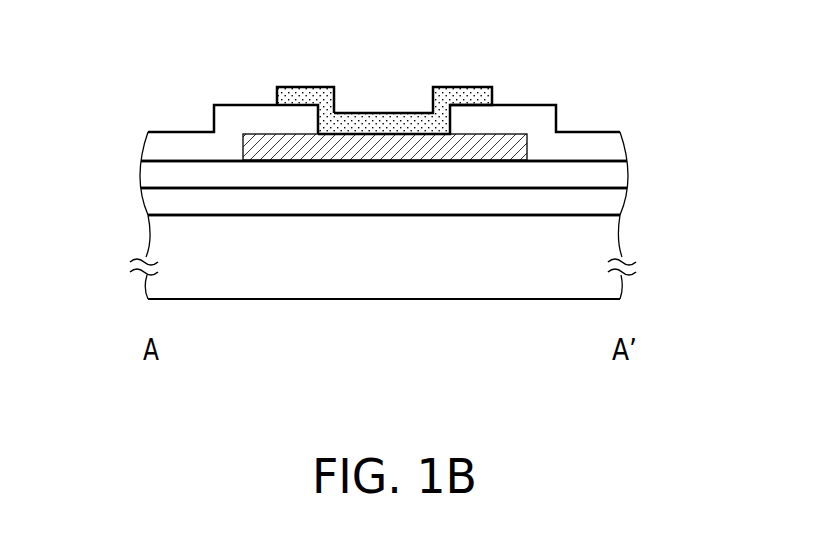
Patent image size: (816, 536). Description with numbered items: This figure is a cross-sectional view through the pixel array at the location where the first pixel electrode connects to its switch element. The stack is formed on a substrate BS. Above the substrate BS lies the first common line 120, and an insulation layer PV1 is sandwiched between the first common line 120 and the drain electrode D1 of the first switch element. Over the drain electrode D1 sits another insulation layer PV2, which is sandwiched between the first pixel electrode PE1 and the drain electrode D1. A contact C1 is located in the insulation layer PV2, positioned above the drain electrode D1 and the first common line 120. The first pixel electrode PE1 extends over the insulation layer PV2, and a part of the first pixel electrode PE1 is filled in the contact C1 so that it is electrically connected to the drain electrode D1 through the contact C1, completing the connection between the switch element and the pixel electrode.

The contact C1 is at (320, 113).
The drain electrode D1 is at (407, 150).
The first pixel electrode PE1 is at (470, 100).
The insulation layer PV2 is at (183, 150).
The insulation layer PV1 is at (585, 175).
The first common line 120 is at (585, 202).
The substrate BS is at (590, 285).